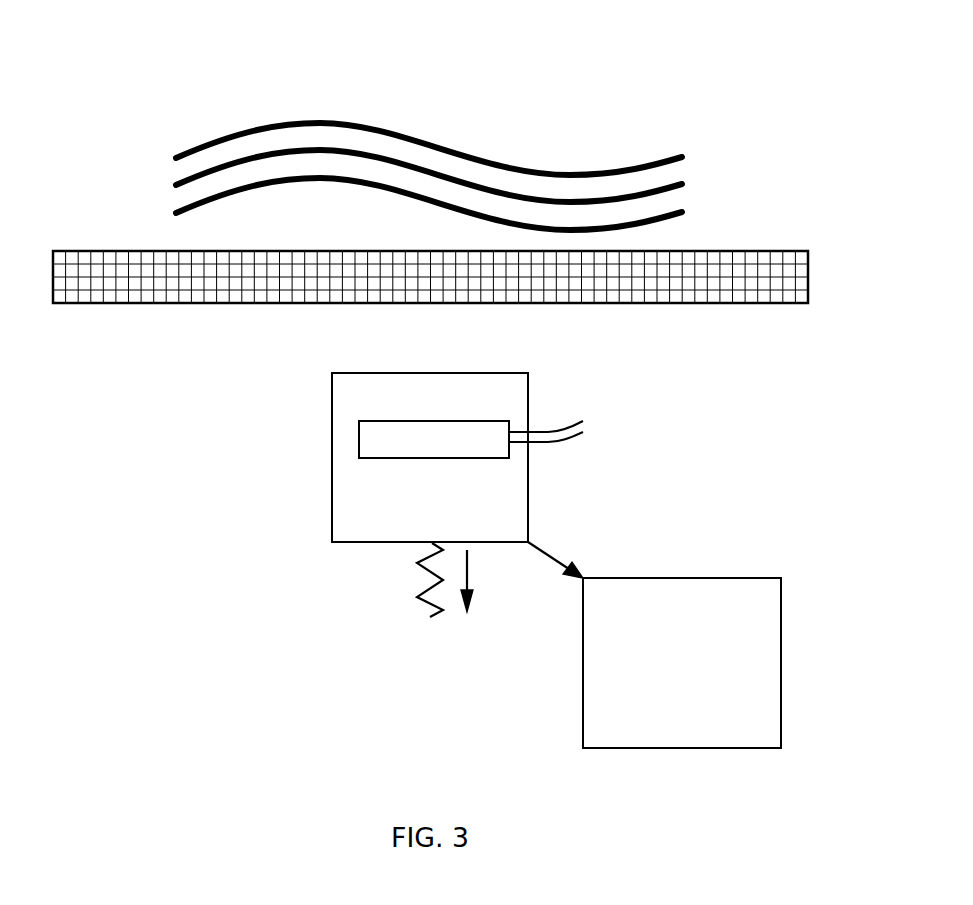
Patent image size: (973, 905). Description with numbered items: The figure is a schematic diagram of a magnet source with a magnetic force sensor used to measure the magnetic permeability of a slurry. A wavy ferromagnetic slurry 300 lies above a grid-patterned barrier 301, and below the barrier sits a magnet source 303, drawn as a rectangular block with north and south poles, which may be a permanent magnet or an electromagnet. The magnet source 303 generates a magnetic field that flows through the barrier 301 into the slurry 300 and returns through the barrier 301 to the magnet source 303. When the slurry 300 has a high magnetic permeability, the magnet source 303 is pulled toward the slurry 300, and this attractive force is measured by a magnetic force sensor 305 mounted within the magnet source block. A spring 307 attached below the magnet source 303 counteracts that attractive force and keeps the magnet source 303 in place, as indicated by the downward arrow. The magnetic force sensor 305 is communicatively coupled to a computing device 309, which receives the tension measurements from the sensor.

The slurry 300 is at (410, 103).
The barrier 301 is at (809, 283).
The magnet source 303 is at (528, 493).
The magnetic force sensor 305 is at (359, 458).
The spring 307 is at (413, 598).
The computing device 309 is at (666, 688).